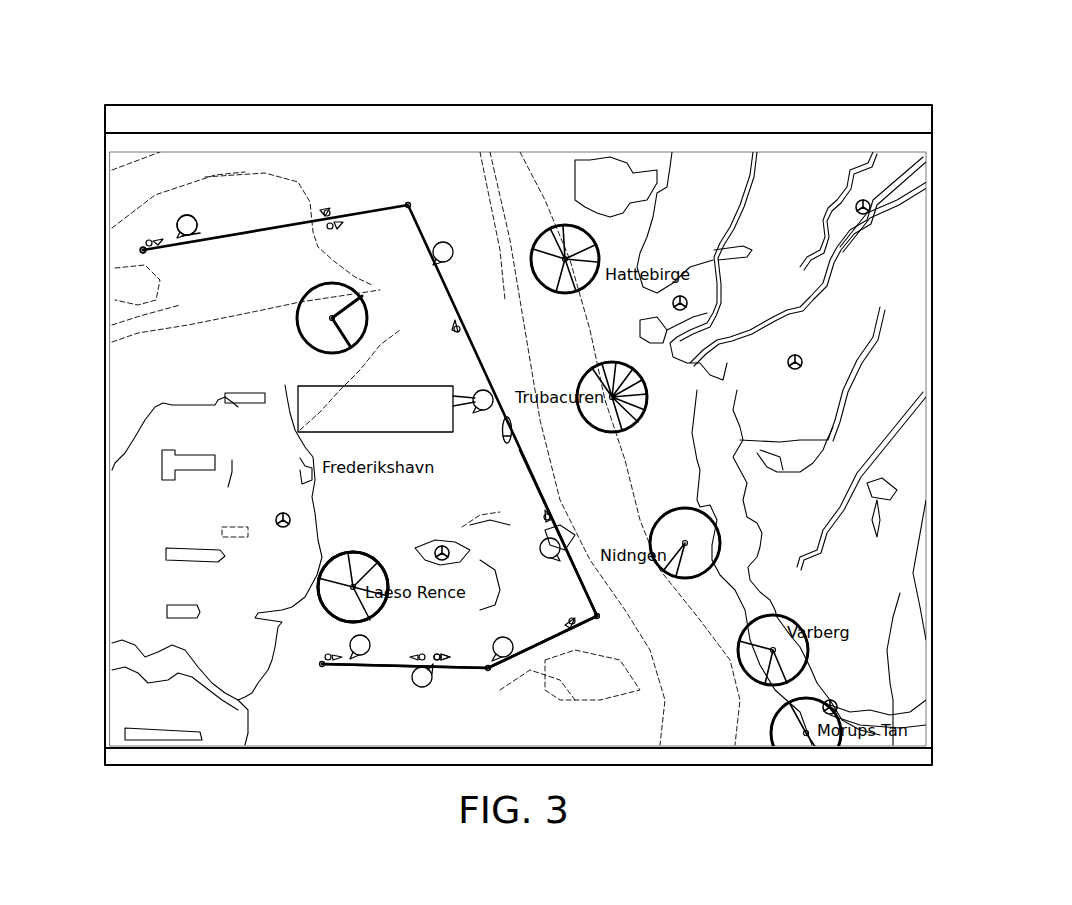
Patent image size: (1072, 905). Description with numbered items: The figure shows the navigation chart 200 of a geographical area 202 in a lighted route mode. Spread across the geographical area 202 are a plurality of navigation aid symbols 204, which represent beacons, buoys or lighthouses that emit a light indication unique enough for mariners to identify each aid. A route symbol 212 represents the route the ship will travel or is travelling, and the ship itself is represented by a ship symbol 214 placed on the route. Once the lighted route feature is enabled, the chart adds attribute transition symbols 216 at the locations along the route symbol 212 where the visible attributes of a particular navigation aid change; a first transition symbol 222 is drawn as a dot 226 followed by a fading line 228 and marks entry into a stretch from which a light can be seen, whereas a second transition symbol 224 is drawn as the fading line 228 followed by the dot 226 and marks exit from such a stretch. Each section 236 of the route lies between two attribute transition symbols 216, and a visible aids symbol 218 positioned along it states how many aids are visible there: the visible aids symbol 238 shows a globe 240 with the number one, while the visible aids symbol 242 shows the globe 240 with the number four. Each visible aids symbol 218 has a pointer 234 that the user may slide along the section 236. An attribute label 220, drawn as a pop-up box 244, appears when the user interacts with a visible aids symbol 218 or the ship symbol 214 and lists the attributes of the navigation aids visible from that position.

The navigation chart 200 is at (956, 110).
The geographical area 202 is at (135, 186).
The navigation aid symbols 204 is at (563, 222).
The route symbol 212 is at (478, 672).
The ship symbol 214 is at (513, 420).
The attribute transition symbol 216 is at (322, 206).
The visible aids symbol 218 is at (196, 213).
The attribute label 220 is at (296, 396).
The first transition symbol 222 is at (348, 562).
The second transition symbol 224 is at (418, 651).
The dot 226 is at (325, 658).
The fading line 228 is at (338, 664).
The pointer 234 is at (180, 237).
The section 236 is at (248, 232).
The visible aids symbol 238 is at (181, 212).
The globe 240 is at (198, 240).
The visible aids symbol 242 is at (572, 540).
The pop-up box 244 is at (231, 470).